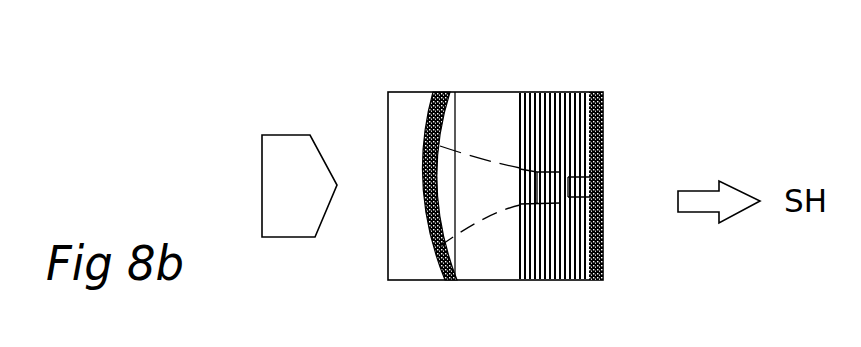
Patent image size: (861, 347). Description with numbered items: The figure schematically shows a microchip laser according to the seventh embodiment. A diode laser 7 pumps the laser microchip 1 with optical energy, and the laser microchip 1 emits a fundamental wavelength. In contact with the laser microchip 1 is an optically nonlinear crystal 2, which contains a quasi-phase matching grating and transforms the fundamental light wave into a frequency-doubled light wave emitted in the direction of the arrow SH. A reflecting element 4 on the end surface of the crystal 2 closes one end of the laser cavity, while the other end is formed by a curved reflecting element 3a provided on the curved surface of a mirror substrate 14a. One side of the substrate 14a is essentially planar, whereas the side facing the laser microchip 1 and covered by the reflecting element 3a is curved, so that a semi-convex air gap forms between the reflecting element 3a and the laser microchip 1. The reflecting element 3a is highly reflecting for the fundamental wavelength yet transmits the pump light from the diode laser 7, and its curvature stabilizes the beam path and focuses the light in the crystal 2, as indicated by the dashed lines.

The diode laser 7 is at (277, 148).
The reflecting element 3a is at (440, 146).
The mirror substrate 14a is at (423, 106).
The laser microchip 1 is at (500, 108).
The optically nonlinear crystal 2 is at (565, 93).
The reflecting element 4 is at (602, 112).